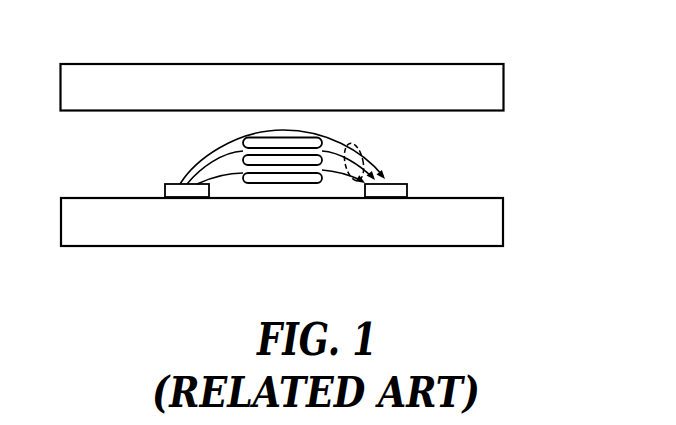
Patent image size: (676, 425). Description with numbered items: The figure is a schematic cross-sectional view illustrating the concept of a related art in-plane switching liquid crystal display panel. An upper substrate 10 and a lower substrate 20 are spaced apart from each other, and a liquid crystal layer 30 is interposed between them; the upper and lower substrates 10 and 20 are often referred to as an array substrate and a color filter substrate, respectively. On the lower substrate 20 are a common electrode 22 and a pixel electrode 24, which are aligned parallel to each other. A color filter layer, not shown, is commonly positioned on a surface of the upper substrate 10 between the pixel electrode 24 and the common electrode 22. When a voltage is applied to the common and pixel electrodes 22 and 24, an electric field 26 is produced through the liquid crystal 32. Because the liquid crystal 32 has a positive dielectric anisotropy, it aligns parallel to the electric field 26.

The upper substrate 10 is at (526, 112).
The lower substrate 20 is at (527, 195).
The liquid crystal layer 30 is at (376, 209).
The liquid crystal 32 is at (283, 184).
The common electrode 22 is at (186, 193).
The pixel electrode 24 is at (392, 192).
The electric field 26 is at (342, 172).